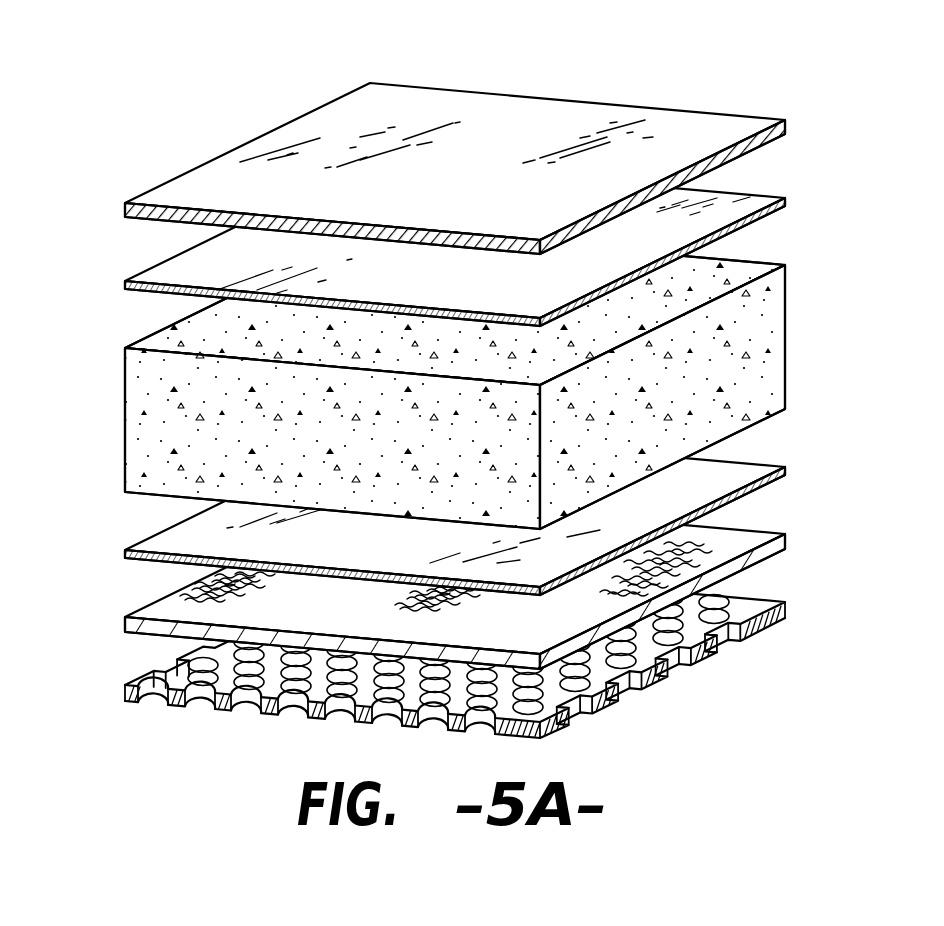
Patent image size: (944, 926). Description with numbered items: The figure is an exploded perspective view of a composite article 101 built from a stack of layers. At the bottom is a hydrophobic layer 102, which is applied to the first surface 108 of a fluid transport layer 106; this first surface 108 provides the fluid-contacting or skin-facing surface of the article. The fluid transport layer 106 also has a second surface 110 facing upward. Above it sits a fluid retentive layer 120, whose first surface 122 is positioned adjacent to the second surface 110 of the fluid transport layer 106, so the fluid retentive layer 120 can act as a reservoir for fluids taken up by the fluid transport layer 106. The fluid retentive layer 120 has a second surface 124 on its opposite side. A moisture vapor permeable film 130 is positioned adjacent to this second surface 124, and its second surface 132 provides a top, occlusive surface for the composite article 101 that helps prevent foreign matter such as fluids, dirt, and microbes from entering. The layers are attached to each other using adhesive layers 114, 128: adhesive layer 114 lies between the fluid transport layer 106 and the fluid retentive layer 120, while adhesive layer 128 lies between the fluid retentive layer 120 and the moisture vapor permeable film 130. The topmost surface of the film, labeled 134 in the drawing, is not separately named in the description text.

The composite article 101 is at (193, 89).
The hydrophobic layer 102 is at (693, 660).
The fluid transport layer 106 is at (448, 573).
The first surface 108 is at (768, 555).
The second surface 110 is at (752, 535).
The adhesive layer 114 is at (125, 555).
The fluid retentive layer 120 is at (457, 378).
The first surface 122 is at (767, 413).
The second surface 124 is at (173, 340).
The adhesive layer 128 is at (788, 200).
The moisture vapor permeable film 130 is at (491, 150).
The second surface 132 is at (758, 150).
The cover layer top surface 134 is at (347, 112).